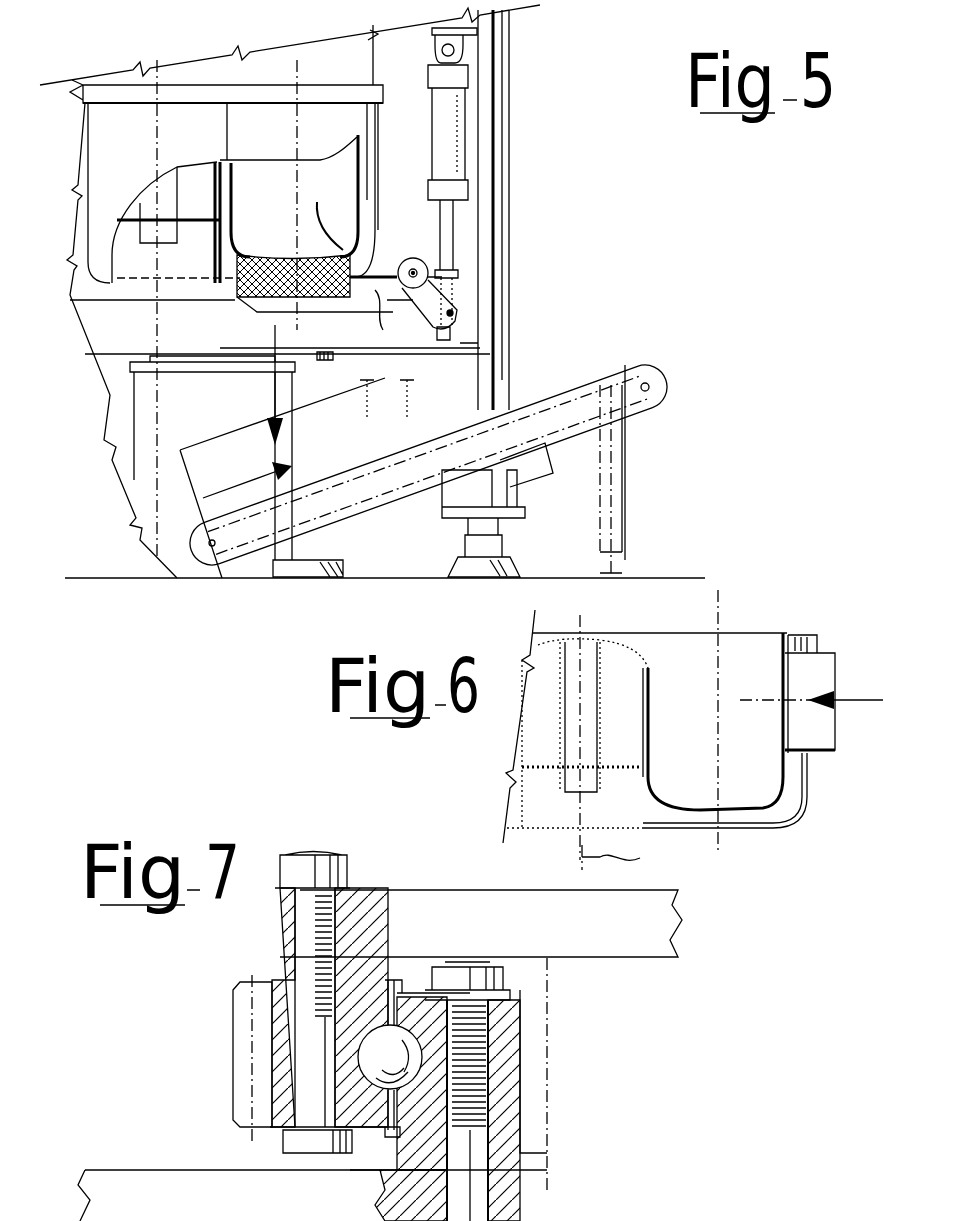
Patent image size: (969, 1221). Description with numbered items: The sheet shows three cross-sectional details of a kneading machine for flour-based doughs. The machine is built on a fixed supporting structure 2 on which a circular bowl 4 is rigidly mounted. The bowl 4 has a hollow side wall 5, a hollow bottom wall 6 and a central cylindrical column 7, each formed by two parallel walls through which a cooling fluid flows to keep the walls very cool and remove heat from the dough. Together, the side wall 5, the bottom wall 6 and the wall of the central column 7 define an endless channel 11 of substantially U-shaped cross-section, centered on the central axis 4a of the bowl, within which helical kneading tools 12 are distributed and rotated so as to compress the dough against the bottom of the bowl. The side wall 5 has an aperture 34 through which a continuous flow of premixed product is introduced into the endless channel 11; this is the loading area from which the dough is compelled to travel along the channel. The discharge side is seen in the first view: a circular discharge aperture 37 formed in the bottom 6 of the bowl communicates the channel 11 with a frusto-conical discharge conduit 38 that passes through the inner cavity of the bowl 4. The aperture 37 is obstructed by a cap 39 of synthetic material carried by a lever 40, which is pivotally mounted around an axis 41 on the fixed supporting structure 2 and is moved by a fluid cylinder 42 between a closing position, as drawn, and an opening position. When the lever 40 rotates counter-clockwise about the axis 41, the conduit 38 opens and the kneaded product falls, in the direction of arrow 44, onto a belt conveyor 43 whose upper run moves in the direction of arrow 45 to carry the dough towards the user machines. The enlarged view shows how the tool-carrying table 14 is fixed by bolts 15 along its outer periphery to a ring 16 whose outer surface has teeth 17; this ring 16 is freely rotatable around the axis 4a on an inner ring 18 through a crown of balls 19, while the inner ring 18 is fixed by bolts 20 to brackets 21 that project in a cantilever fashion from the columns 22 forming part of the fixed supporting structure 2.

In FIG. 5, the fixed supporting structure 2 is at (508, 92).
In FIG. 5, the columns 22 is at (505, 32).
In FIG. 5, the circular bowl 4 is at (450, 172).
In FIG. 6, the circular bowl 4 is at (810, 798).
In FIG. 6, the central axis of the bowl 4a is at (632, 856).
In FIG. 6, the side wall 5 is at (820, 650).
In FIG. 6, the bottom wall 6 is at (733, 829).
In FIG. 6, the central cylindrical column 7 is at (655, 695).
In FIG. 5, the endless channel 11 is at (270, 160).
In FIG. 6, the endless channel 11 is at (743, 657).
In FIG. 6, the kneading tool 12 is at (721, 614).
In FIG. 7, the table 14 is at (617, 925).
In FIG. 7, the bolts 15 is at (305, 928).
In FIG. 7, the ring 16 is at (310, 1108).
In FIG. 7, the teeth 17 is at (245, 1031).
In FIG. 7, the inner ring 18 is at (490, 1061).
In FIG. 7, the crown of balls 19 is at (380, 1043).
In FIG. 7, the bolts 20 is at (490, 1219).
In FIG. 7, the brackets 21 is at (142, 1189).
In FIG. 6, the aperture 34 is at (820, 752).
In FIG. 5, the discharge aperture 37 is at (321, 207).
In FIG. 5, the discharge conduit 38 is at (238, 274).
In FIG. 5, the cap 39 is at (240, 293).
In FIG. 5, the lever 40 is at (433, 320).
In FIG. 5, the axis 41 is at (428, 270).
In FIG. 5, the fluid cylinder 42 is at (440, 173).
In FIG. 5, the belt conveyor 43 is at (628, 365).
In FIG. 5, the arrow 44 is at (273, 408).
In FIG. 5, the arrow 45 is at (170, 499).